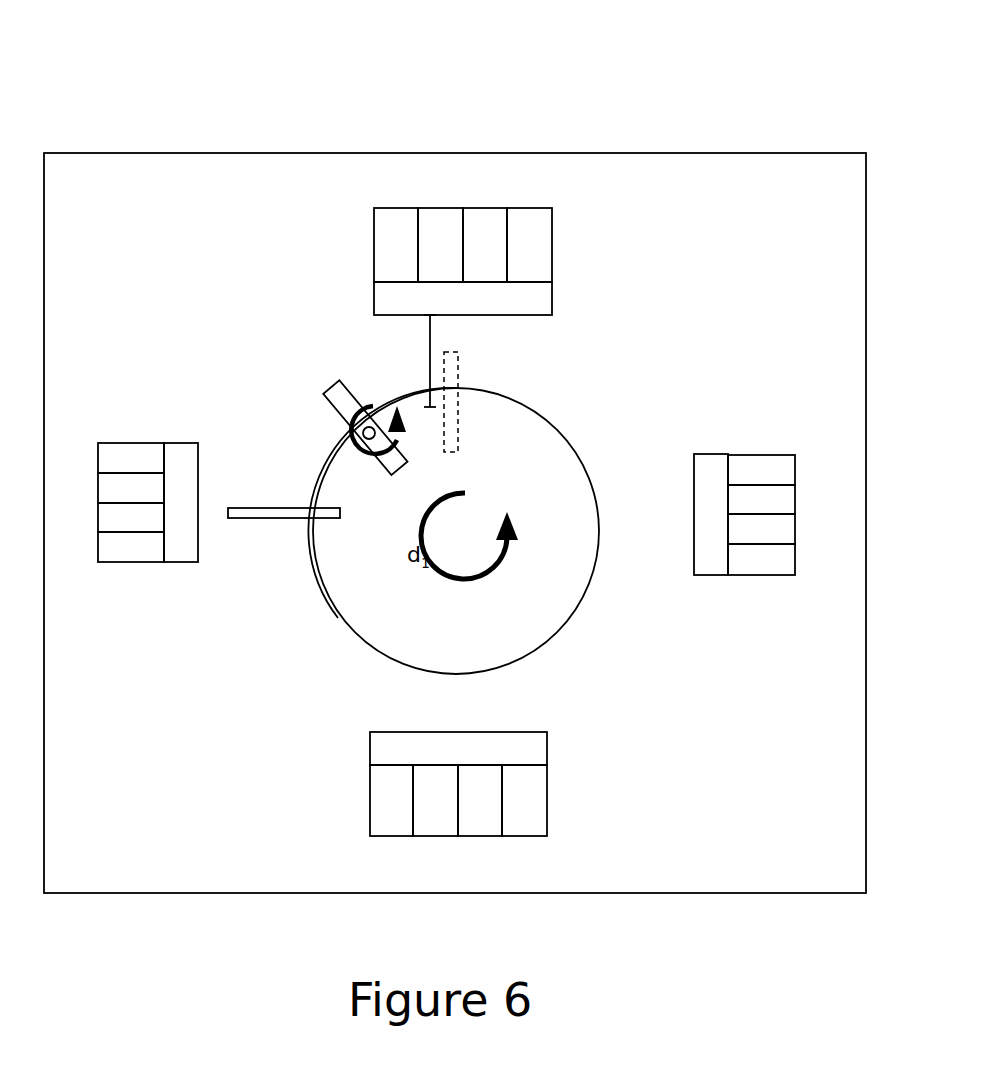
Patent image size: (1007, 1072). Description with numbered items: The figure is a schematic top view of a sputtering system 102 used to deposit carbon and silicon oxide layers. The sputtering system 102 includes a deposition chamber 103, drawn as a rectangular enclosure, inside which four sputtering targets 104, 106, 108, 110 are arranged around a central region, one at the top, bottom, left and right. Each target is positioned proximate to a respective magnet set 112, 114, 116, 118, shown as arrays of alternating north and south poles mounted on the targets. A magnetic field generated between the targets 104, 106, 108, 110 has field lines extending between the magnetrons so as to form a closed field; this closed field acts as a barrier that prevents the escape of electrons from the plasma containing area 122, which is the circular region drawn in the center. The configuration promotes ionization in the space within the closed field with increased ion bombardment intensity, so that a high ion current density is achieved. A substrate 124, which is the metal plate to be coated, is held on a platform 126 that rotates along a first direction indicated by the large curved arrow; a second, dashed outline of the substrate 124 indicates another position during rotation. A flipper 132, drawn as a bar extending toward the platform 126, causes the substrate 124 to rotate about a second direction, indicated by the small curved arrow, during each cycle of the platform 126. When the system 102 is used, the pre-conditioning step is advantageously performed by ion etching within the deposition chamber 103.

The sputtering system 102 is at (611, 82).
The deposition chamber 103 is at (228, 152).
The sputtering target 104 is at (374, 290).
The sputtering target 106 is at (547, 742).
The sputtering target 108 is at (187, 448).
The sputtering target 110 is at (722, 455).
The magnet set 112 is at (556, 239).
The magnet set 114 is at (356, 799).
The magnet set 116 is at (141, 571).
The magnet set 118 is at (760, 584).
The plasma containing area 122 is at (589, 418).
The substrate 124 is at (334, 386).
The platform 126 is at (338, 618).
The flipper 132 is at (280, 507).